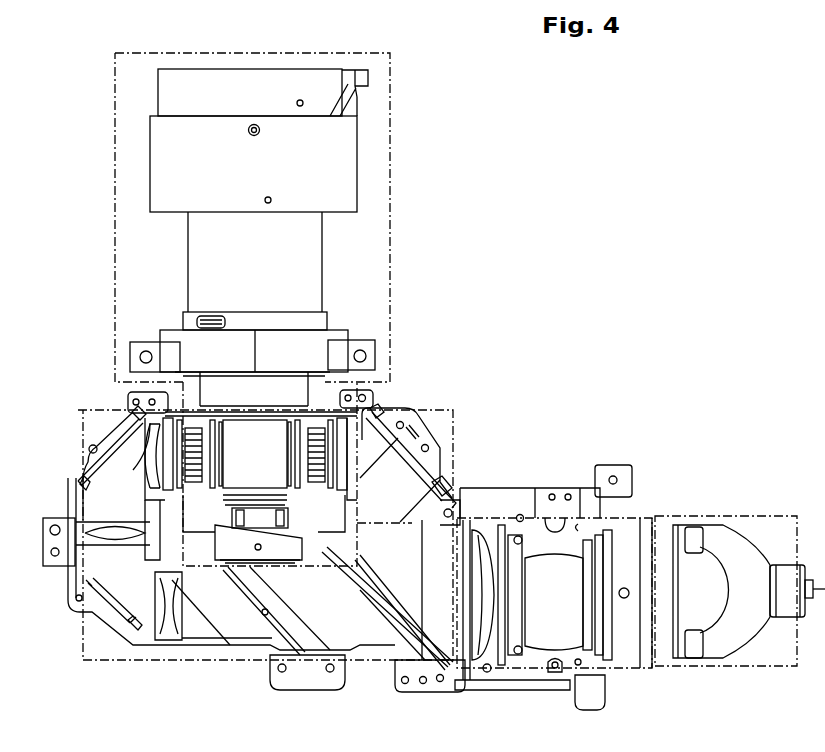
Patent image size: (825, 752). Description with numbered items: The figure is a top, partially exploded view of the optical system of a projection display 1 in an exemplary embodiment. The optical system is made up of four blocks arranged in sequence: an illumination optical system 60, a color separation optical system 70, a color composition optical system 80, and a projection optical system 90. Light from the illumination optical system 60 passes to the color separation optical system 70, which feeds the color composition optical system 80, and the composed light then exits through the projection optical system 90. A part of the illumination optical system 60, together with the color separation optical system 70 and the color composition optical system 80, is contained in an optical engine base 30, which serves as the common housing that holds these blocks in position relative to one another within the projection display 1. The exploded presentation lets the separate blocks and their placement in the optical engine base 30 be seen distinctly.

The projection display 1 is at (556, 185).
The optical engine base 30 is at (500, 488).
The illumination optical system 60 is at (668, 516).
The color separation optical system 70 is at (196, 663).
The color composition optical system 80 is at (380, 383).
The projection optical system 90 is at (388, 186).